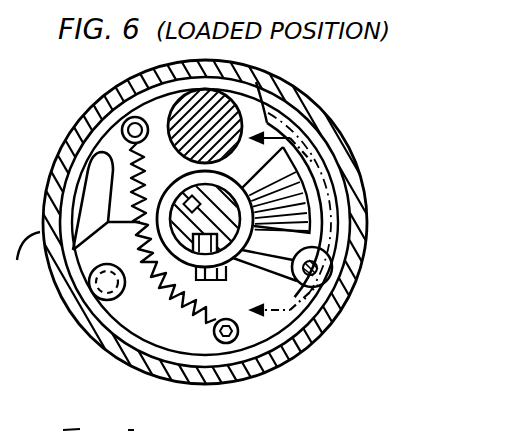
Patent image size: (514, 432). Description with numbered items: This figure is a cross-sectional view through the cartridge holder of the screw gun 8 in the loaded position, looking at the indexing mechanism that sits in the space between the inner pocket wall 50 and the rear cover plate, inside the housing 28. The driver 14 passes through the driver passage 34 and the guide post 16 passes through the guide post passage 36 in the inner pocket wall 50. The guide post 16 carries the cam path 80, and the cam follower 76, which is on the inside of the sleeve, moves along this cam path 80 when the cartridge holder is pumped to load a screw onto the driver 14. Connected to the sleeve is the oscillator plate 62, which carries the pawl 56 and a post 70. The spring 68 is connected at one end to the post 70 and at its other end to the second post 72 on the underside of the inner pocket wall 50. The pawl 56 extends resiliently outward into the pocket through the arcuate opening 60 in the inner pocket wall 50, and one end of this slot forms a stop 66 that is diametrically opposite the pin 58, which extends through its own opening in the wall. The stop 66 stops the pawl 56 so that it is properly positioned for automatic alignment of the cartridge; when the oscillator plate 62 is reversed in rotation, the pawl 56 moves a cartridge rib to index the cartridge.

The screw gun 8 is at (282, 211).
The driver 14 is at (237, 96).
The guide post 16 is at (300, 165).
The housing 28 is at (24, 263).
The driver passage 34 is at (243, 104).
The guide post passage 36 is at (250, 233).
The inner pocket wall 50 is at (100, 100).
The pawl 56 is at (98, 313).
The pin 58 is at (333, 259).
The arcuate opening 60 is at (80, 180).
The oscillator plate 62 is at (153, 335).
The stop 66 is at (78, 137).
The spring 68 is at (136, 208).
The post 70 is at (230, 343).
The second post 72 is at (137, 117).
The cam follower 76 is at (316, 314).
The cam path 80 is at (173, 236).